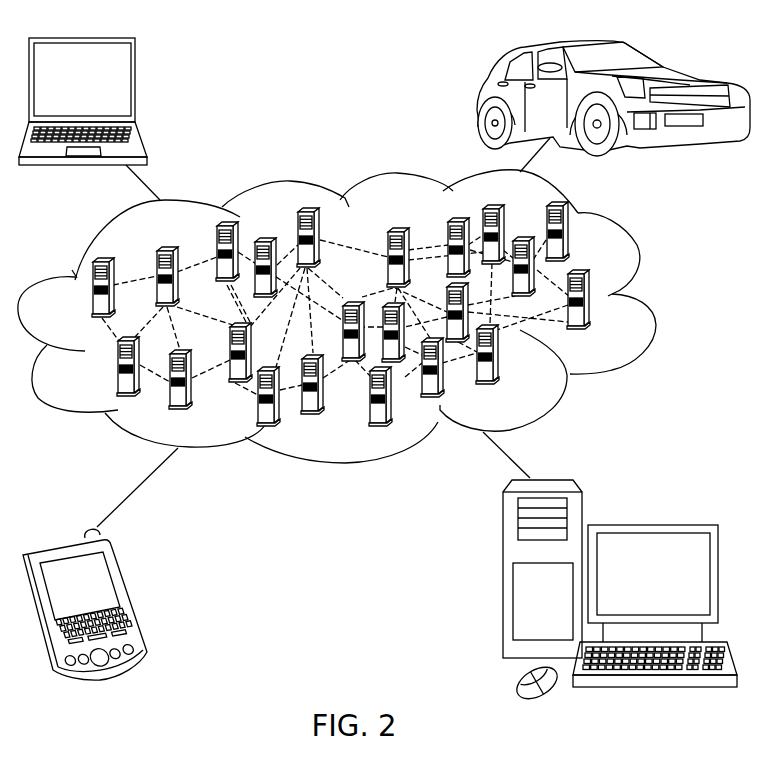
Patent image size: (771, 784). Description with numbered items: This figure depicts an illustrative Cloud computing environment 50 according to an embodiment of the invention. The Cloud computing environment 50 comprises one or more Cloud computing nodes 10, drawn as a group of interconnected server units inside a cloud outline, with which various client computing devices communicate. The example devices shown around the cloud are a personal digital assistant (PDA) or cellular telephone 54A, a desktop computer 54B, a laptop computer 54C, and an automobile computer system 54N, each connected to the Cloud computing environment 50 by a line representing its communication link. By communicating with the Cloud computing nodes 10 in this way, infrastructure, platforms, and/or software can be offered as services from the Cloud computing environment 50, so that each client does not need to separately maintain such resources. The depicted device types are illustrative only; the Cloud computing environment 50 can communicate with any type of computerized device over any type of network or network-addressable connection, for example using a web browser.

The Cloud computing node 10 is at (613, 324).
The Cloud computing environment 50 is at (650, 300).
The personal digital assistant (PDA) or cellular telephone 54A is at (128, 595).
The desktop computer 54B is at (652, 523).
The laptop computer 54C is at (138, 83).
The automobile computer system 54N is at (482, 97).